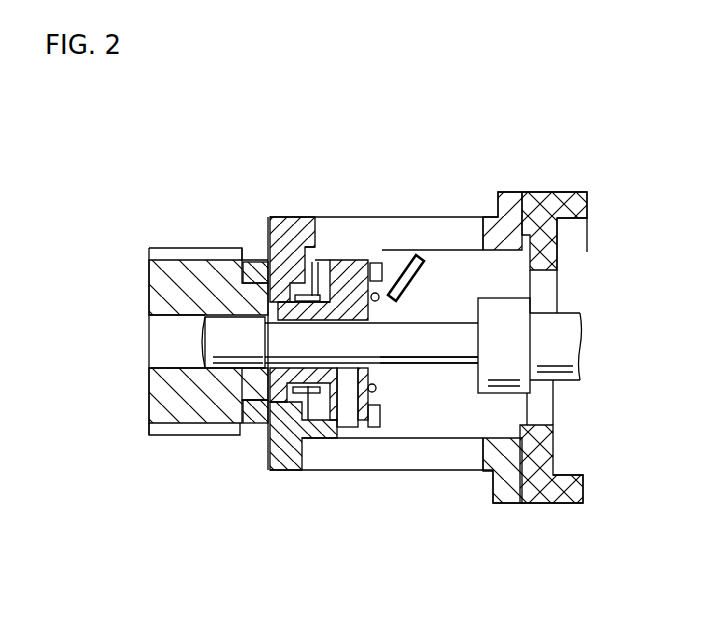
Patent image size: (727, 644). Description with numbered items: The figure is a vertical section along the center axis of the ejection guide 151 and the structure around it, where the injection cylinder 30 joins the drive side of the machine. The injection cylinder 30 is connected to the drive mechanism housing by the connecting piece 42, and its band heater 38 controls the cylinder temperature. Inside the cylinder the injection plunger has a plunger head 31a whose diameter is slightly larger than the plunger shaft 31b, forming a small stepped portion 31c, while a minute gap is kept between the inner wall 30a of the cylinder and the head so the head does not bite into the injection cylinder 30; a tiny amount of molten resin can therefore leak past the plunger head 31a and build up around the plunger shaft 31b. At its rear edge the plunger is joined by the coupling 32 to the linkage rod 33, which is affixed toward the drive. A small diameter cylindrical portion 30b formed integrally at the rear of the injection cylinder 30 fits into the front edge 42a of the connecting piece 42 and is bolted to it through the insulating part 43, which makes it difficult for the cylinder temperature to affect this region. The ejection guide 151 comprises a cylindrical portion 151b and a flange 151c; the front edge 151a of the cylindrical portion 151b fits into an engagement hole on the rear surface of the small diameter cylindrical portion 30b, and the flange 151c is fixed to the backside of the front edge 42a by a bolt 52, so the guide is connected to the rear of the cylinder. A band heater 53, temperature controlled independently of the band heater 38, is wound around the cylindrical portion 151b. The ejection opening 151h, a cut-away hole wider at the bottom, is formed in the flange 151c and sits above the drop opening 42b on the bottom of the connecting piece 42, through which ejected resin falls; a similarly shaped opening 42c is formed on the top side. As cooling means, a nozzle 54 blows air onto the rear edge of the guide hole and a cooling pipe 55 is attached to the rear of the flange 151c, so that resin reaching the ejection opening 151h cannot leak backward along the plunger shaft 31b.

The injection cylinder 30 is at (195, 430).
The inner wall 30a is at (150, 358).
The small diameter cylindrical portion 30b is at (262, 250).
The plunger head 31a is at (243, 425).
The plunger shaft 31b is at (432, 364).
The groove portion 31c is at (262, 412).
The coupling 32 is at (378, 300).
The linkage rod 33 is at (567, 313).
The band heater 38 is at (160, 432).
The connecting piece 42 is at (288, 217).
The front edge 42a is at (272, 450).
The drop opening 42b is at (468, 462).
The opening 42c is at (472, 232).
The insulating part 43 is at (254, 272).
The bolt 52 is at (375, 427).
The band heater 53 is at (316, 295).
The nozzle 54 is at (407, 227).
The cooling pipe 55 is at (573, 192).
The ejection guide 151 is at (338, 248).
The front edge 151a is at (292, 298).
The cylindrical portion 151b is at (287, 393).
The flange 151c is at (401, 258).
The ejection opening 151h is at (337, 420).